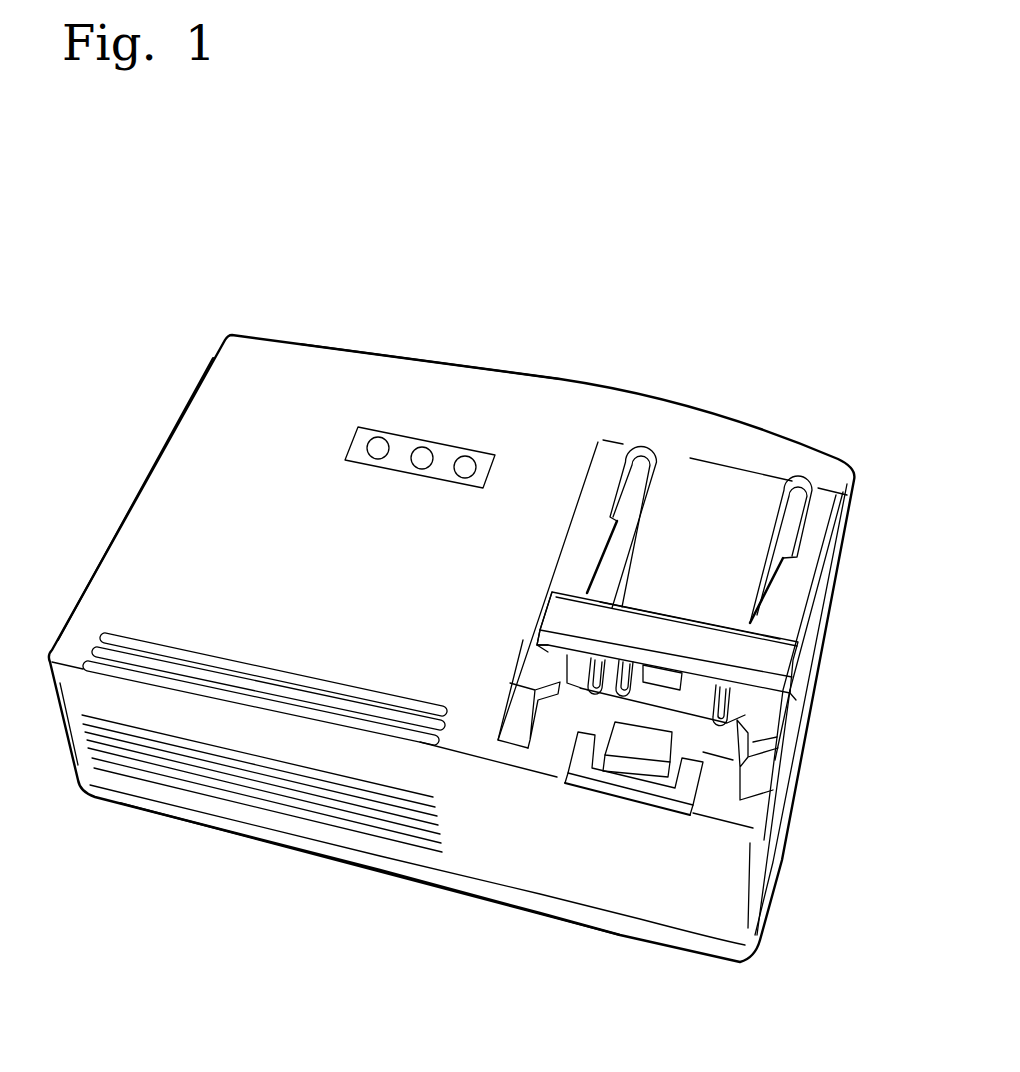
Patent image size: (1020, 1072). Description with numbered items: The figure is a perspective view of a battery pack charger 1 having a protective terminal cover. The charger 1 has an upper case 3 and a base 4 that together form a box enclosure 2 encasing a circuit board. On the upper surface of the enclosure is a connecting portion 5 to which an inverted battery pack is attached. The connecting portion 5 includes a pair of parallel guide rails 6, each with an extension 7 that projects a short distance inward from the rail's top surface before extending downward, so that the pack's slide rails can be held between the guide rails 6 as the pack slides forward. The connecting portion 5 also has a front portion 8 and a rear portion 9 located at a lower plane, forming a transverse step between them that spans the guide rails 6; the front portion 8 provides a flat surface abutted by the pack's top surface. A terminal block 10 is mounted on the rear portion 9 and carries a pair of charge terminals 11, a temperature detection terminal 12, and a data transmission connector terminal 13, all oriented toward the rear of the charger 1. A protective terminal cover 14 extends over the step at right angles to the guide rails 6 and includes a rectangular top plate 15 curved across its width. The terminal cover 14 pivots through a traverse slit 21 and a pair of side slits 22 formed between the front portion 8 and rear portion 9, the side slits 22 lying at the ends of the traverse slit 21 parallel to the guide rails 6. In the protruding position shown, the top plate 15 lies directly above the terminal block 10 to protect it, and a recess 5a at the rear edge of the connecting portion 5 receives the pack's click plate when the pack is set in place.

The battery pack charger 1 is at (580, 345).
The box enclosure 2 is at (432, 362).
The upper case 3 is at (175, 453).
The base 4 is at (440, 885).
The connecting portion 5 is at (722, 572).
The recess 5a is at (642, 797).
The guide rails 6 is at (505, 668).
The extension 7 is at (547, 703).
The front portion 8 is at (693, 530).
The rear portion 9 is at (695, 730).
The terminal block 10 is at (650, 697).
The charge terminals 11 is at (600, 662).
The temperature detection terminal 12 is at (627, 668).
The data transmission connector terminal 13 is at (673, 670).
The protective terminal cover 14 is at (805, 650).
The top plate 15 is at (750, 625).
The traverse slit 21 is at (572, 593).
The side slits 22 is at (540, 630).